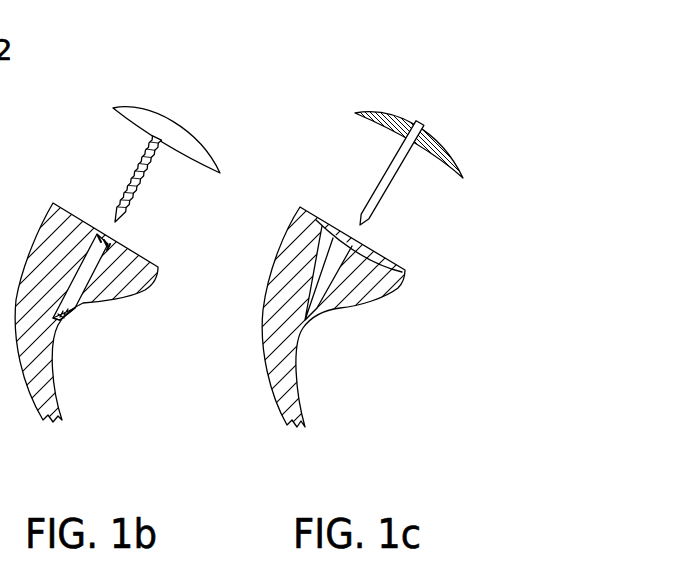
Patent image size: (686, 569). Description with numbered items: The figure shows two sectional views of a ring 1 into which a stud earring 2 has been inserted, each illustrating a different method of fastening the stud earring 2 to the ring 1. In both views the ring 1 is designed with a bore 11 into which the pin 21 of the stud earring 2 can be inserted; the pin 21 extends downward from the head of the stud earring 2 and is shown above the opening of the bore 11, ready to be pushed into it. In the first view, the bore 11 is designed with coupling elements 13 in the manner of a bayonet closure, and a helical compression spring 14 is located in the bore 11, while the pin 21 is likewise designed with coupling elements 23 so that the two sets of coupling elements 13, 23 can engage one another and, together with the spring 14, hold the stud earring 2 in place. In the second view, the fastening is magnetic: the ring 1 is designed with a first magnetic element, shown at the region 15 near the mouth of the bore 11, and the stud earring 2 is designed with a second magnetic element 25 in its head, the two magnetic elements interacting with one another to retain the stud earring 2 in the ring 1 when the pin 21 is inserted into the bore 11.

In FIG. 1C, the ring 1 is at (280, 353).
In FIG. 1B, the stud earring 2 is at (161, 136).
In FIG. 1C, the stud earring 2 is at (329, 125).
In FIG. 1B, the bore 11 is at (83, 273).
In FIG. 1C, the bore 11 is at (328, 280).
In FIG. 1B, the coupling elements 13 is at (117, 247).
In FIG. 1B, the helical compression spring 14 is at (78, 308).
In FIG. 1C, the countersunk recess 15 is at (393, 283).
In FIG. 1B, the pin 21 is at (141, 192).
In FIG. 1C, the pin 21 is at (388, 185).
In FIG. 1B, the coupling elements 23 is at (160, 138).
In FIG. 1C, the second magnetic element 25 is at (406, 134).